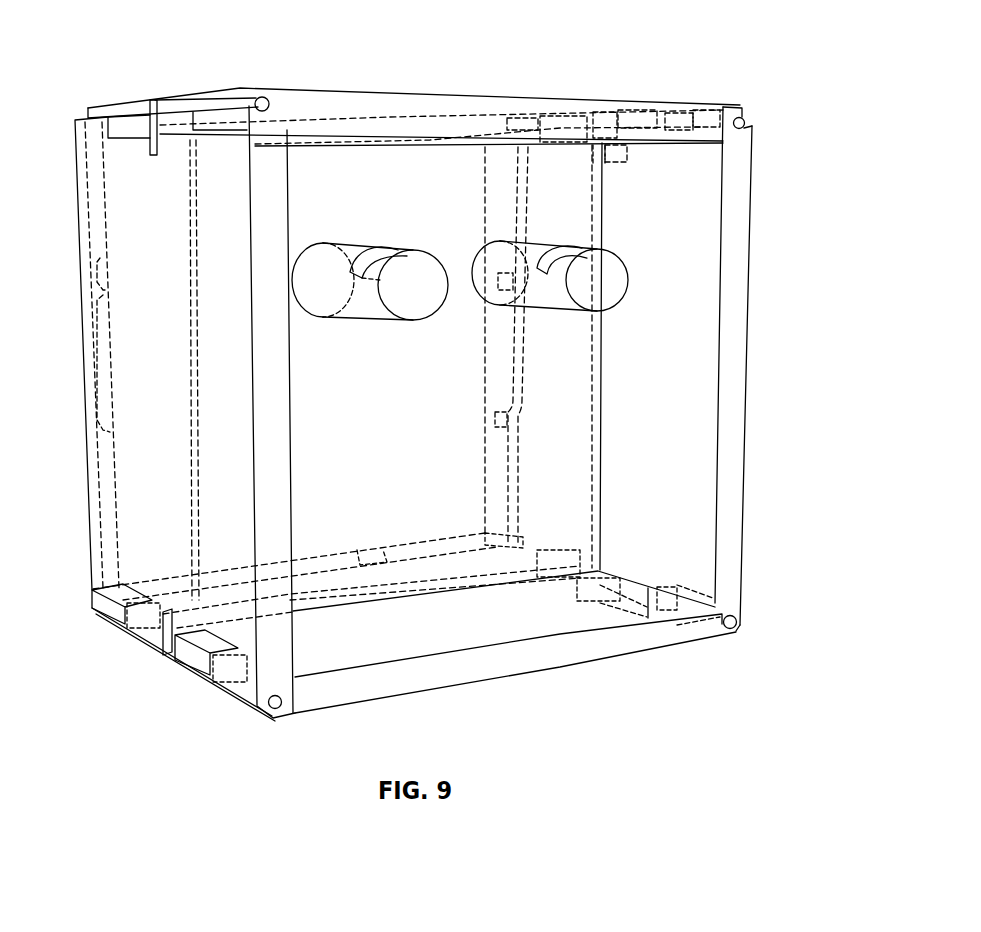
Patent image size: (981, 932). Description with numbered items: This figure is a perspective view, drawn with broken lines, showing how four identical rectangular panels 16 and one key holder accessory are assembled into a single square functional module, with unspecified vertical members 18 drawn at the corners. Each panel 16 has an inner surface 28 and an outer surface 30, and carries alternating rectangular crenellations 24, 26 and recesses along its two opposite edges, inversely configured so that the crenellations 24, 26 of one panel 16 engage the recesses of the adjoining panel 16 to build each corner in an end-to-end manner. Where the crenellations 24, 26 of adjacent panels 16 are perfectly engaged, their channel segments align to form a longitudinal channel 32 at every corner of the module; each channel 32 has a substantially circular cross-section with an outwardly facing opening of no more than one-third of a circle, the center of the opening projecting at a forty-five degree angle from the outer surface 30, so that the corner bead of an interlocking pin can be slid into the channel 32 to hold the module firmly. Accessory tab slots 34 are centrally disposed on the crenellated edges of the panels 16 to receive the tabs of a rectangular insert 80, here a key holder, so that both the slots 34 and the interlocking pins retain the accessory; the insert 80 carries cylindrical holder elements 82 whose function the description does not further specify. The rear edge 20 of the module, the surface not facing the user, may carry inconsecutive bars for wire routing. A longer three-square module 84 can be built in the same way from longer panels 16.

The rectangular panel 16 is at (450, 88).
The vertical post 18 is at (320, 107).
The rear edge 20 is at (85, 442).
The first crenellation 24 is at (93, 610).
The crenellation 26 is at (217, 687).
The inner surface 28 is at (680, 446).
The outer surface 30 is at (170, 377).
The longitudinal channel 32 is at (260, 97).
The accessory tab slot 34 is at (163, 650).
The rectangular insert 80 is at (408, 444).
The cylinder 82 is at (327, 255).
The three-square module 84 is at (370, 252).